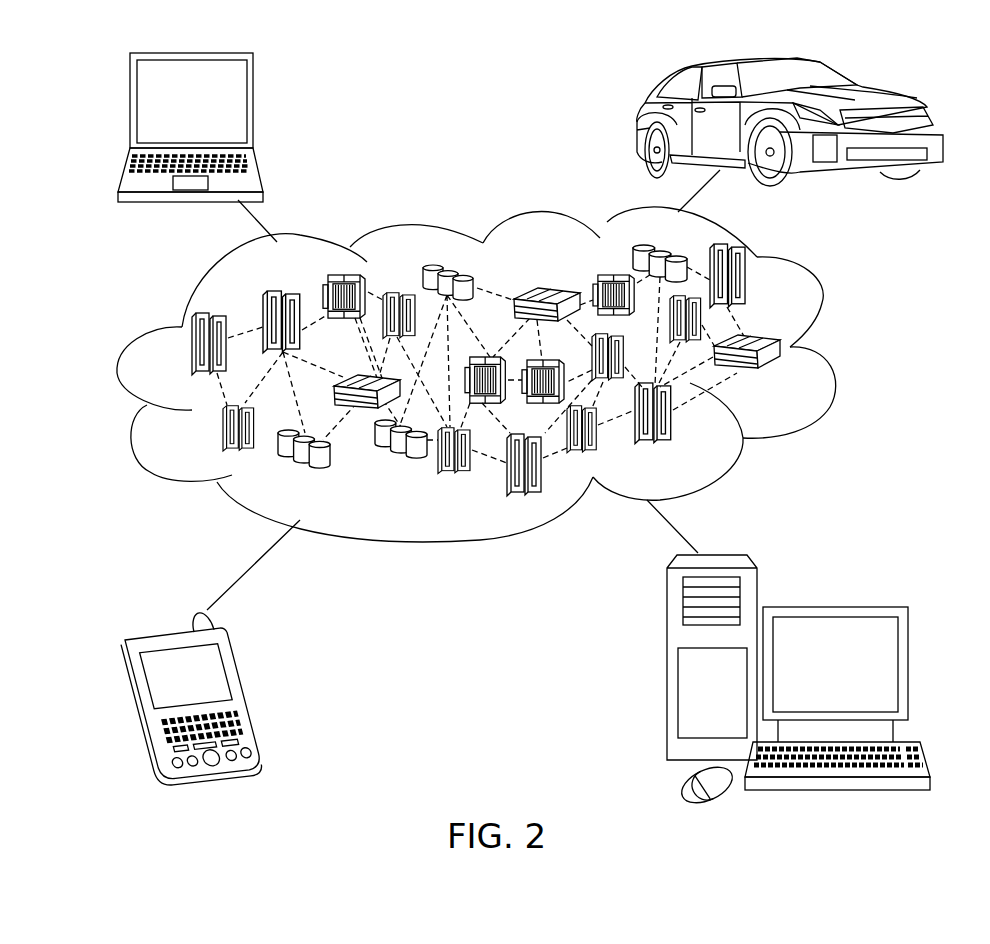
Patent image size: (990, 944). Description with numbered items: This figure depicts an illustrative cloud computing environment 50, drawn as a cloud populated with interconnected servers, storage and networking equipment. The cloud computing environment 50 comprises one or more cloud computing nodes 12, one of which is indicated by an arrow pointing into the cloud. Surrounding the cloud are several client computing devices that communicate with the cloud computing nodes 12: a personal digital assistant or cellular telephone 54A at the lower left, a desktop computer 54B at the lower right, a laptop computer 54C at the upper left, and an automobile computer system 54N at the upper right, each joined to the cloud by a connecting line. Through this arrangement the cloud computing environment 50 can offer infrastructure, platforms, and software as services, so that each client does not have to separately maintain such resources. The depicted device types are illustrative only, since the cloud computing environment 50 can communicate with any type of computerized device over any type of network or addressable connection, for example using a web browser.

The cloud computing environment 50 is at (832, 352).
The cloud computing node 12 is at (783, 378).
The personal digital assistant or cellular telephone 54A is at (243, 692).
The desktop computer 54B is at (833, 605).
The laptop computer 54C is at (253, 109).
The automobile computer system 54N is at (640, 123).